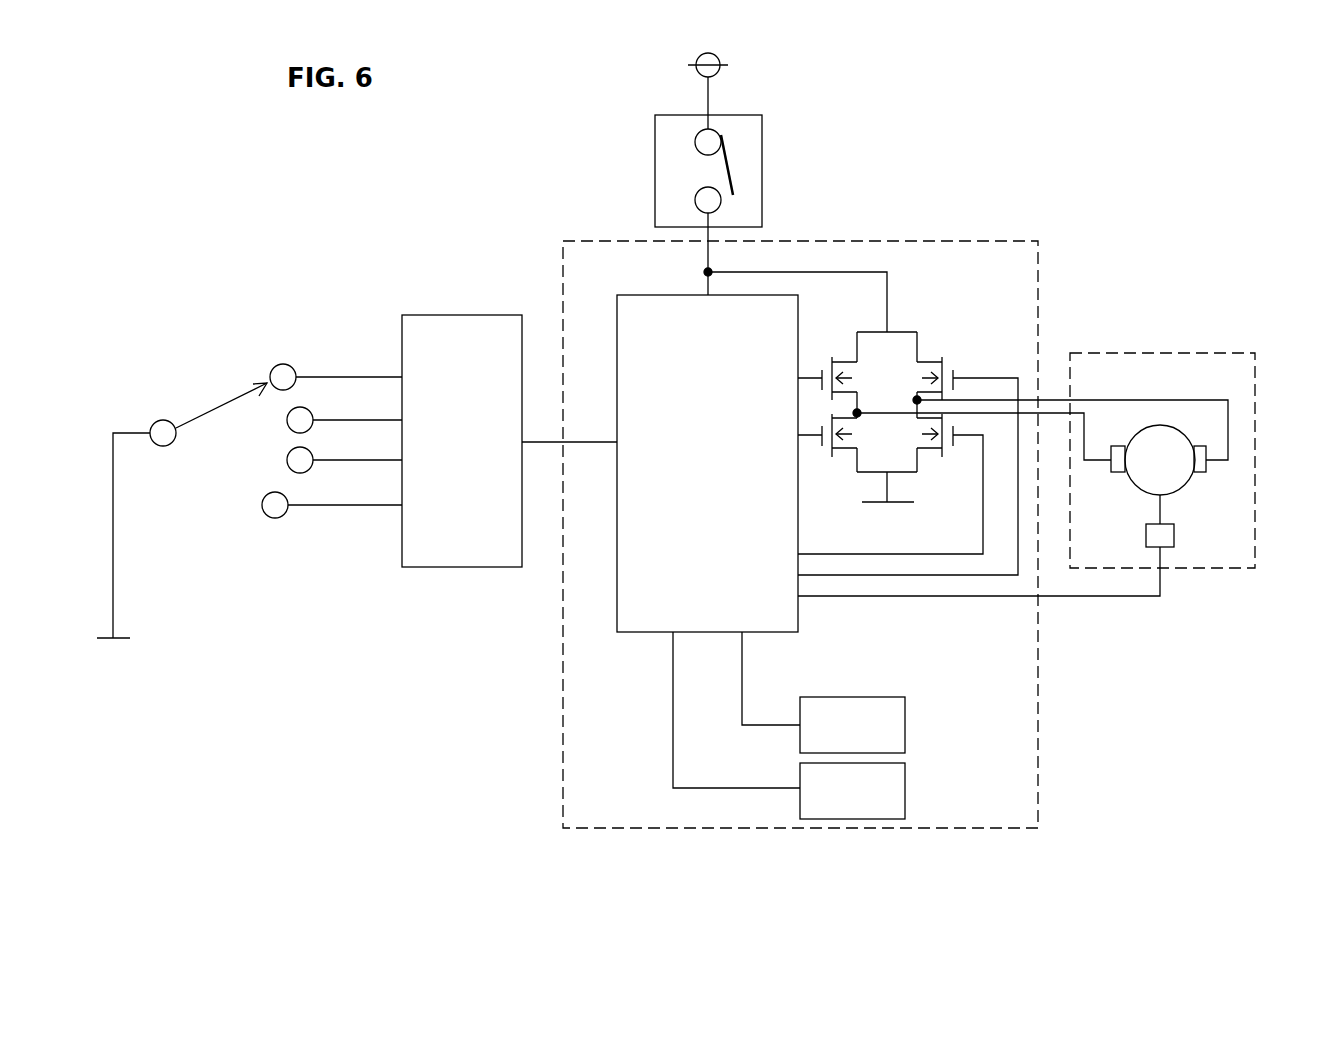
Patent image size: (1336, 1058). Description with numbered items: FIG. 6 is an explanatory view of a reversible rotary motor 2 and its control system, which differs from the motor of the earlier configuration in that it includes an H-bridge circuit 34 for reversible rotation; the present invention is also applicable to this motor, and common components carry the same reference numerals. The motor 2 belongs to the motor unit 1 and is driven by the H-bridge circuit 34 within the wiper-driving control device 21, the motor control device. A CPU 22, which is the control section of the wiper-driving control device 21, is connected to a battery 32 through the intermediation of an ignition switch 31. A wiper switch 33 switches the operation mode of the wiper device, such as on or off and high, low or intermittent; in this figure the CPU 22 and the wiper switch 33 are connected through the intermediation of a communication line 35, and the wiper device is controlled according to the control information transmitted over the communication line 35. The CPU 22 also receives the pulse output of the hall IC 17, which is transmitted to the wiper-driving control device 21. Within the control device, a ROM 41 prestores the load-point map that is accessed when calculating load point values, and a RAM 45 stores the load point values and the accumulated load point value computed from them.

The motor unit 1 is at (1173, 353).
The motor 2 is at (1207, 463).
The hall IC 17 is at (1174, 537).
The wiper-driving control device 21 is at (760, 828).
The CPU 22 is at (617, 318).
The ignition switch 31 is at (762, 143).
The battery 32 is at (697, 62).
The wiper switch 33 is at (203, 357).
The H-bridge circuit 34 is at (925, 313).
The communication line 35 is at (597, 446).
The ROM 41 is at (905, 728).
The RAM 45 is at (905, 792).